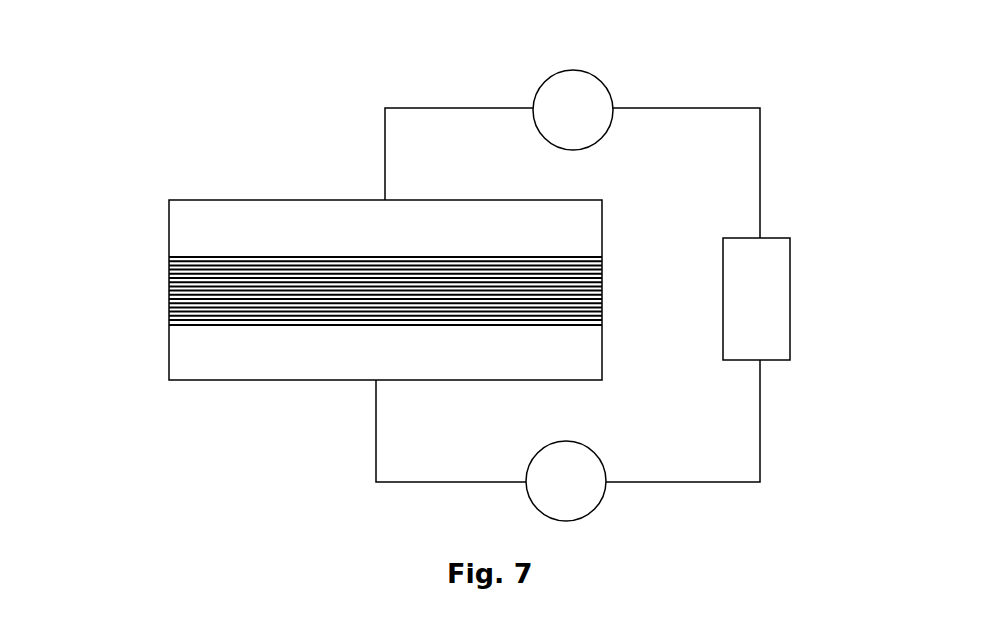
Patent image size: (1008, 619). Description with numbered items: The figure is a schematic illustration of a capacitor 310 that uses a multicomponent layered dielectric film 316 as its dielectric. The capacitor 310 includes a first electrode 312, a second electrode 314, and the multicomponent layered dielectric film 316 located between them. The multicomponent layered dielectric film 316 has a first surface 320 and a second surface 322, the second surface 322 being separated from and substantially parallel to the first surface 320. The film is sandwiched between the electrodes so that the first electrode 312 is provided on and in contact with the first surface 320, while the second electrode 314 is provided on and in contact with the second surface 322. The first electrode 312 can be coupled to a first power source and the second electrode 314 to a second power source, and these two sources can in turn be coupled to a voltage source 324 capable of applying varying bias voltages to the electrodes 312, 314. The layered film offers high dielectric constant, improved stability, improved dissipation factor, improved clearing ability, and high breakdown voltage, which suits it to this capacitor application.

The capacitor 310 is at (609, 34).
The first electrode 312 is at (169, 230).
The second electrode 314 is at (169, 357).
The multicomponent layered dielectric film 316 is at (169, 290).
The first surface 320 is at (573, 257).
The second surface 322 is at (579, 325).
The voltage source 324 is at (790, 283).